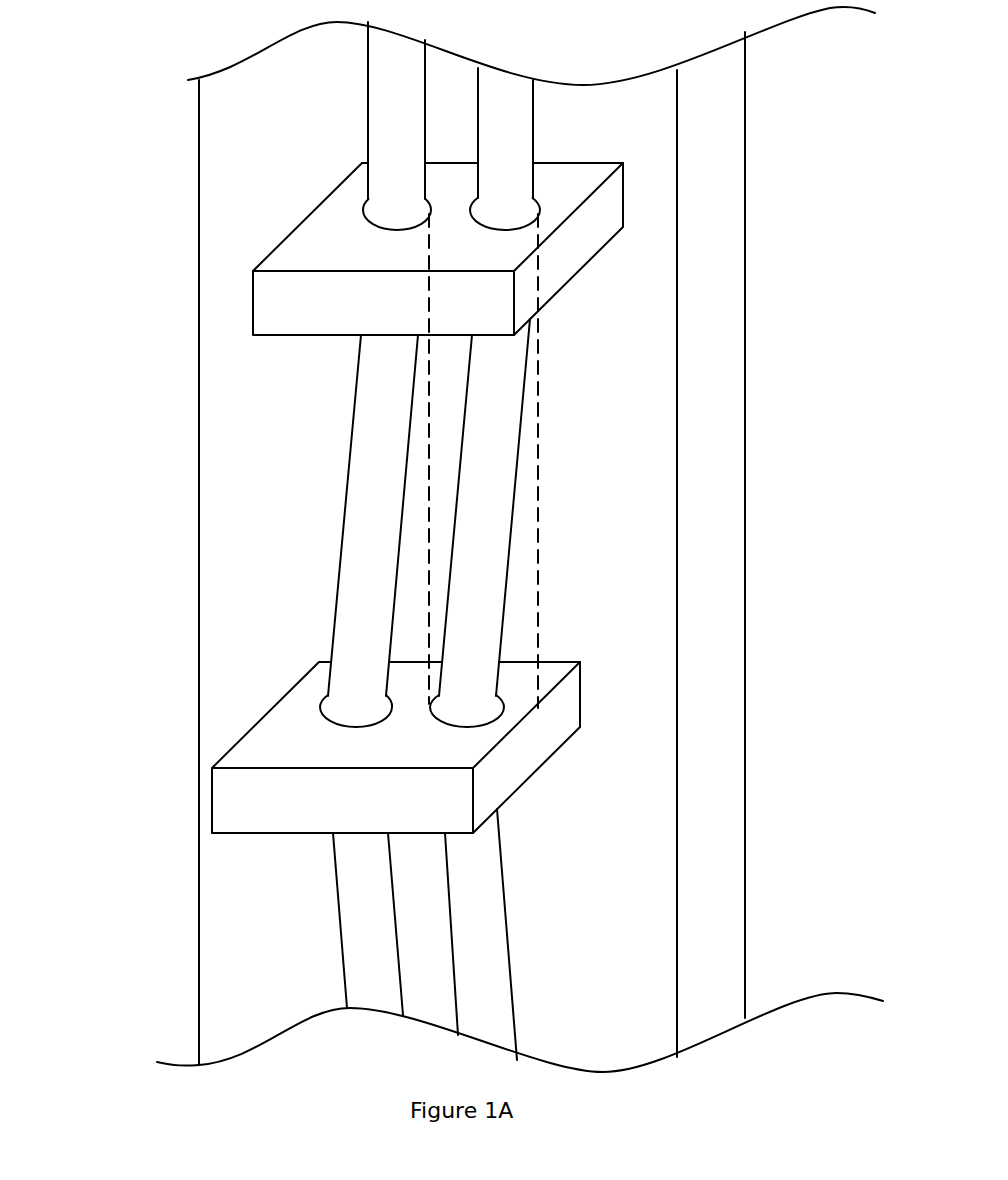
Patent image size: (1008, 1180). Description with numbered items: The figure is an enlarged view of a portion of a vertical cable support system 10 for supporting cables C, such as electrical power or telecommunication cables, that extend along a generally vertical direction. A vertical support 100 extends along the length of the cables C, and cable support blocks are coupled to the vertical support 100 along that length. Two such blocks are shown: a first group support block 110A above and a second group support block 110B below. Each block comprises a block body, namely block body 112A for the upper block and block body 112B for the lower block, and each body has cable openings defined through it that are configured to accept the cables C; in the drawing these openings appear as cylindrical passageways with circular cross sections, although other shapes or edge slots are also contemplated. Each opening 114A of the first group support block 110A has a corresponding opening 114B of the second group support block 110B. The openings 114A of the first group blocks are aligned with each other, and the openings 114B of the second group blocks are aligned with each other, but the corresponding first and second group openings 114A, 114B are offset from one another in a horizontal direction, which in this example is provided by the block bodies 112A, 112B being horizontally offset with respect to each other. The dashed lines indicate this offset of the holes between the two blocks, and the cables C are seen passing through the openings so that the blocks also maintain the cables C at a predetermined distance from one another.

The vertical cable support system 10 is at (145, 118).
The vertical support 100 is at (745, 289).
The first group support block 110A is at (365, 216).
The second group support block 110B is at (321, 714).
The block body 112A is at (313, 238).
The block body 112B is at (275, 741).
The first group opening 114A is at (367, 205).
The second group opening 114B is at (320, 708).
The cables C is at (322, 904).